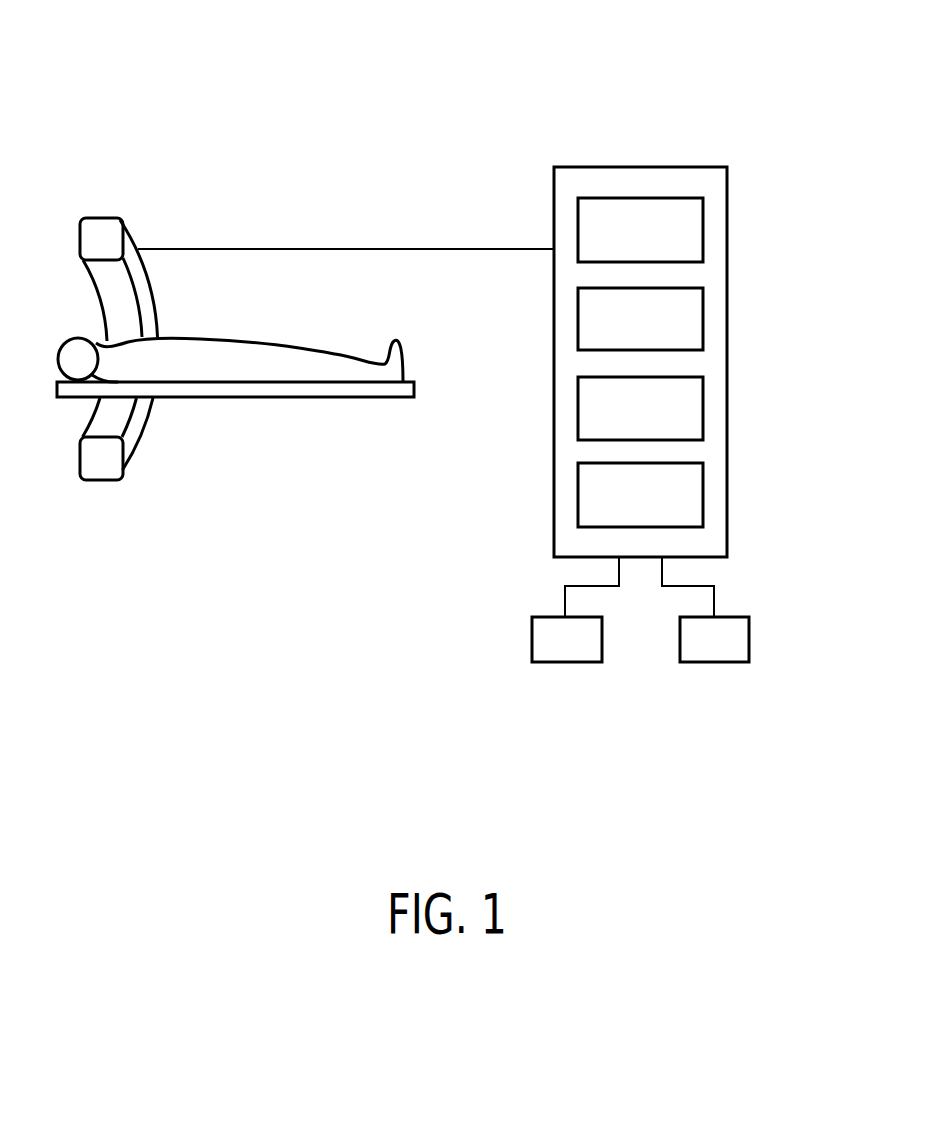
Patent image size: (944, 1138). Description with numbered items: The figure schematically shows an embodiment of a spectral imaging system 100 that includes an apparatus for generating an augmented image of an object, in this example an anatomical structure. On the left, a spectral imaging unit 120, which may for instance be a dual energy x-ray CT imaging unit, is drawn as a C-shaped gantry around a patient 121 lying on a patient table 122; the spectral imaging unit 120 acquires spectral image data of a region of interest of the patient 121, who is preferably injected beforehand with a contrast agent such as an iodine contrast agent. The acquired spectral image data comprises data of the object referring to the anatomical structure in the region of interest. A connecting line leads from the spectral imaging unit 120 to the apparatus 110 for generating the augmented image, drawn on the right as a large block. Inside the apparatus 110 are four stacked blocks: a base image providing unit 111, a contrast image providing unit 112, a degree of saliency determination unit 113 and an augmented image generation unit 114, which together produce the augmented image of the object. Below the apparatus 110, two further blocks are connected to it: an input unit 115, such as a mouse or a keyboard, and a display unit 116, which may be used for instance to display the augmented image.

The spectral imaging system 100 is at (733, 56).
The apparatus for generating an augmented image 110 is at (728, 180).
The base image providing unit 111 is at (704, 226).
The contrast image providing unit 112 is at (704, 320).
The degree of saliency determination unit 113 is at (704, 410).
The augmented image generation unit 114 is at (704, 495).
The input unit 115 is at (569, 665).
The display unit 116 is at (722, 665).
The spectral imaging unit 120 is at (134, 232).
The patient 121 is at (327, 350).
The patient table 122 is at (403, 398).